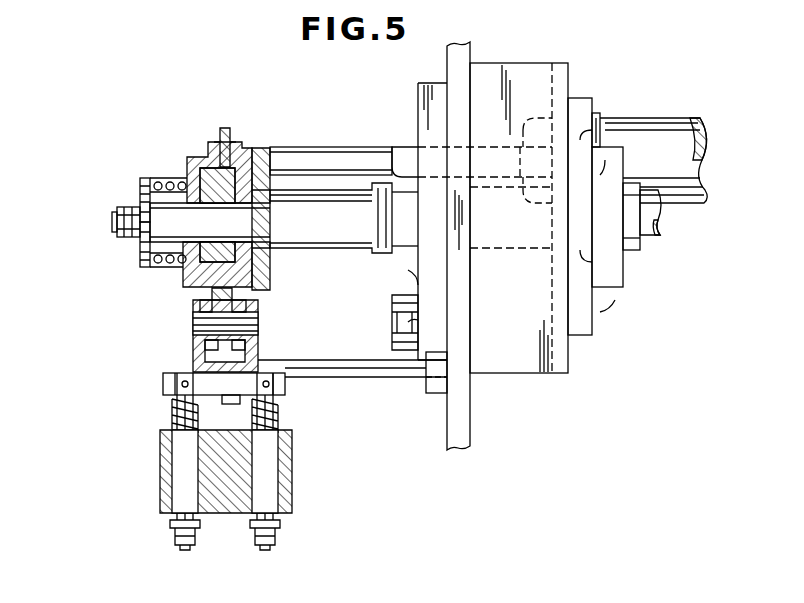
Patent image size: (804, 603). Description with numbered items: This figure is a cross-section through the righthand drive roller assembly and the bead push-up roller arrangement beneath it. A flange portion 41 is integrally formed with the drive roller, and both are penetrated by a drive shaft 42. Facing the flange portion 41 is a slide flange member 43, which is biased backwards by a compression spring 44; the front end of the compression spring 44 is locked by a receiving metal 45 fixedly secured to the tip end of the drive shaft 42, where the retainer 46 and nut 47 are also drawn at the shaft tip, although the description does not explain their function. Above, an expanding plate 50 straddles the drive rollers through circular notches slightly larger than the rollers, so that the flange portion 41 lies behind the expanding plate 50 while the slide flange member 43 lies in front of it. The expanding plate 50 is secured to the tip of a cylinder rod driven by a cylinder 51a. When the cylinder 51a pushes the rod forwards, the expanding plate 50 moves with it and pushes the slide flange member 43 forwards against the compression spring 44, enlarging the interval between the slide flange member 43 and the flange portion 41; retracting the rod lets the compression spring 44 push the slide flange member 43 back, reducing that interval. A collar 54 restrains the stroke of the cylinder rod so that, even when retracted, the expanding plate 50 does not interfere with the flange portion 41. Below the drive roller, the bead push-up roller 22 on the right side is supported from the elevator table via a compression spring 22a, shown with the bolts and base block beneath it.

The bead push-up roller 22 is at (215, 296).
The compression spring 22a is at (178, 414).
The flange portion 41 is at (262, 148).
The drive shaft 42 is at (312, 238).
The slide flange member 43 is at (192, 157).
The compression spring 44 is at (168, 178).
The receiving metal 45 is at (143, 180).
The retainer 46 is at (143, 250).
The nut 47 is at (117, 220).
The expanding plate 50 is at (226, 128).
The cylinder 51a is at (634, 140).
The collar 54 is at (310, 166).